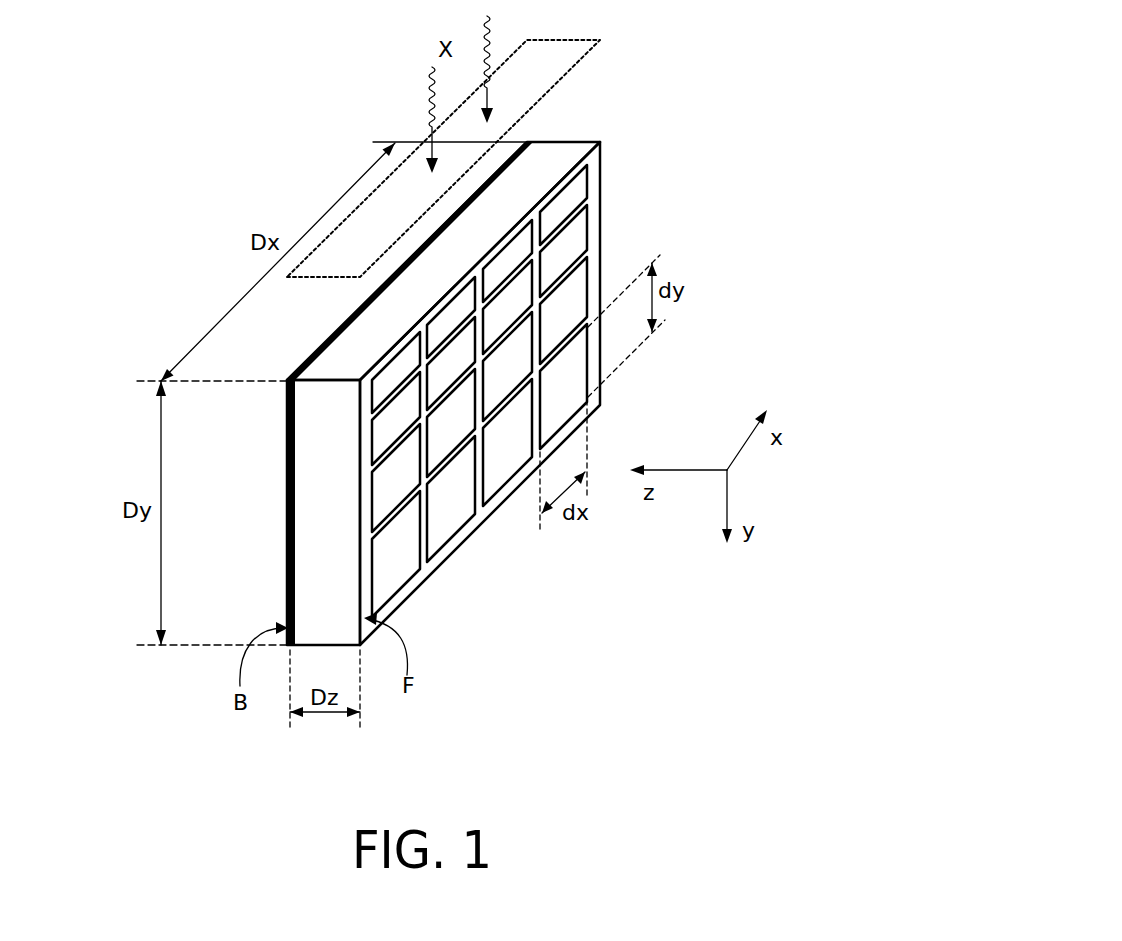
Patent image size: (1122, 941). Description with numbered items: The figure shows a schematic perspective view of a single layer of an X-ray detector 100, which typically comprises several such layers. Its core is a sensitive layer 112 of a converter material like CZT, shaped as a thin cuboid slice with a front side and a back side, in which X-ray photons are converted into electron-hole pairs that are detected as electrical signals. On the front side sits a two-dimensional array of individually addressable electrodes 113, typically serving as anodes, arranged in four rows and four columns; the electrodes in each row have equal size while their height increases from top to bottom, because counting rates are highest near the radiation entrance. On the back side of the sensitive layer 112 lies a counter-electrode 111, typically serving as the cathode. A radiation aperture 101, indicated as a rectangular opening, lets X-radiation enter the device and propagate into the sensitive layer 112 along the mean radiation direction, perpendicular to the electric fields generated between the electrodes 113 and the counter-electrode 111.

The X-ray detector 100 is at (595, 618).
The radiation aperture 101 is at (597, 43).
The counter-electrode 111 is at (531, 137).
The sensitive layer 112 is at (560, 155).
The electrodes 113 is at (587, 215).